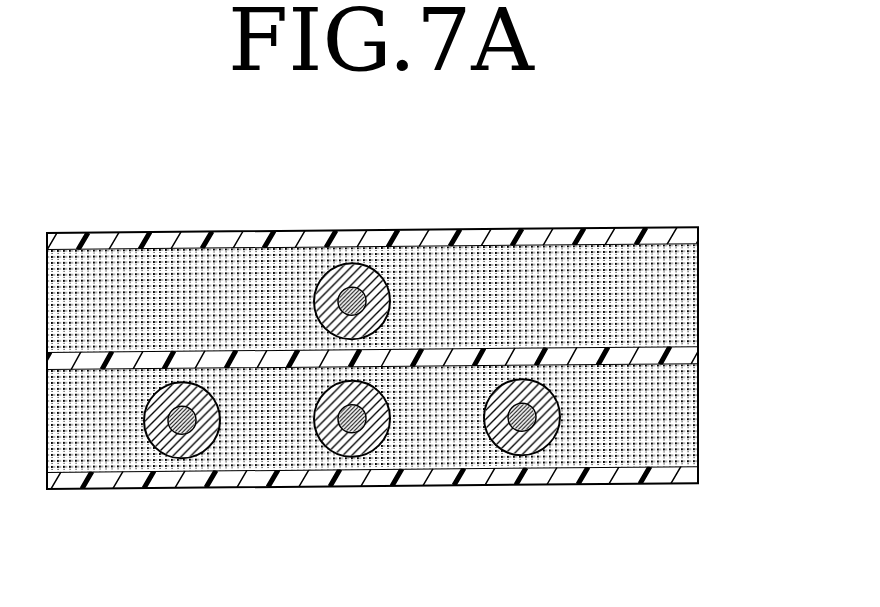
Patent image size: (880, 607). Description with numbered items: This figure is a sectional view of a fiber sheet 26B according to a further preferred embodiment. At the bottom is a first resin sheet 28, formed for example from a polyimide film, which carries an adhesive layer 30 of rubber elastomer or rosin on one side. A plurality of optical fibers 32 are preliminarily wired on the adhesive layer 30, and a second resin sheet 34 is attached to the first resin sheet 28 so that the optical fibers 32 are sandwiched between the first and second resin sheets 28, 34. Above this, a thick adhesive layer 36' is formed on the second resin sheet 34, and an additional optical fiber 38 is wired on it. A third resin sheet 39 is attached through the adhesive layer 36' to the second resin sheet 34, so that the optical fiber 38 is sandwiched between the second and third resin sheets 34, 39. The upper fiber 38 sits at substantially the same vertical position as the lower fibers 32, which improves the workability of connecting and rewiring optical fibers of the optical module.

The fiber sheet 26B is at (603, 226).
The first resin sheet 28 is at (437, 480).
The adhesive layer 30 is at (687, 412).
The optical fibers 32 is at (178, 455).
The second resin sheet 34 is at (690, 354).
The thick adhesive layer 36' is at (411, 298).
The optical fiber 38 is at (351, 264).
The third resin sheet 39 is at (497, 240).